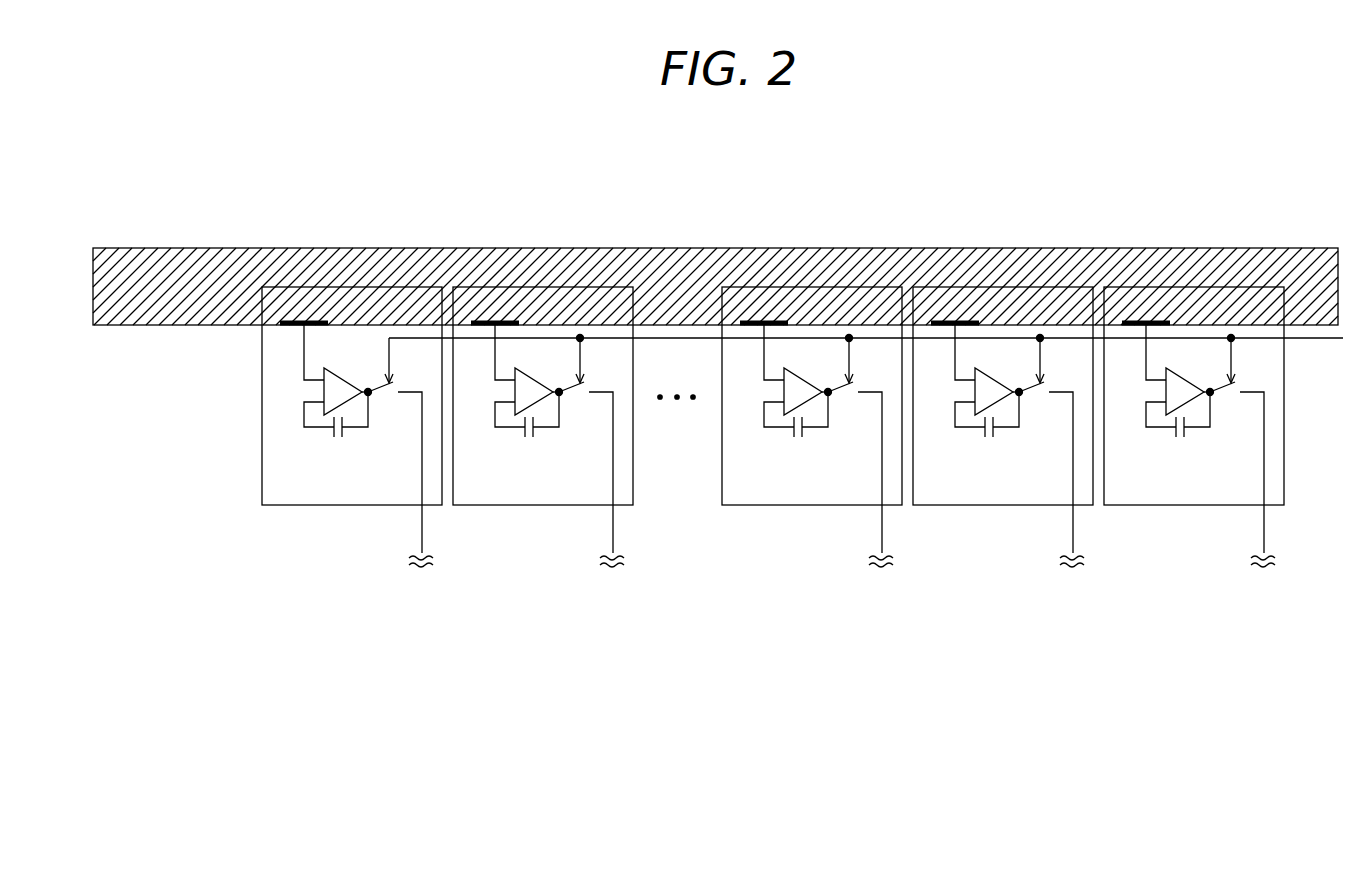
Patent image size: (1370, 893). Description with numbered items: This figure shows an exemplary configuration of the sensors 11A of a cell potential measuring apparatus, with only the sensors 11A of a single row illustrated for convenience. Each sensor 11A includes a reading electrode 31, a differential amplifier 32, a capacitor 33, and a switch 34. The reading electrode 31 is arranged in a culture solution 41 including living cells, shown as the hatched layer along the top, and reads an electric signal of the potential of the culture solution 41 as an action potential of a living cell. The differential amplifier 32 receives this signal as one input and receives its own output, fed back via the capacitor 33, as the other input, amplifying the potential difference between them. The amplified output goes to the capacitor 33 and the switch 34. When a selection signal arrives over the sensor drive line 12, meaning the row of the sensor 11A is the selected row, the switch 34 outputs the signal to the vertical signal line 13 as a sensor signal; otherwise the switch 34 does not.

The culture solution 41 is at (174, 275).
The reading electrode 31 is at (314, 323).
The differential amplifier 32 is at (352, 380).
The capacitor 33 is at (328, 438).
The switch 34 is at (392, 390).
The sensor 11A is at (348, 506).
The vertical signal line 13 is at (424, 532).
The sensor drive line 12 is at (1311, 340).